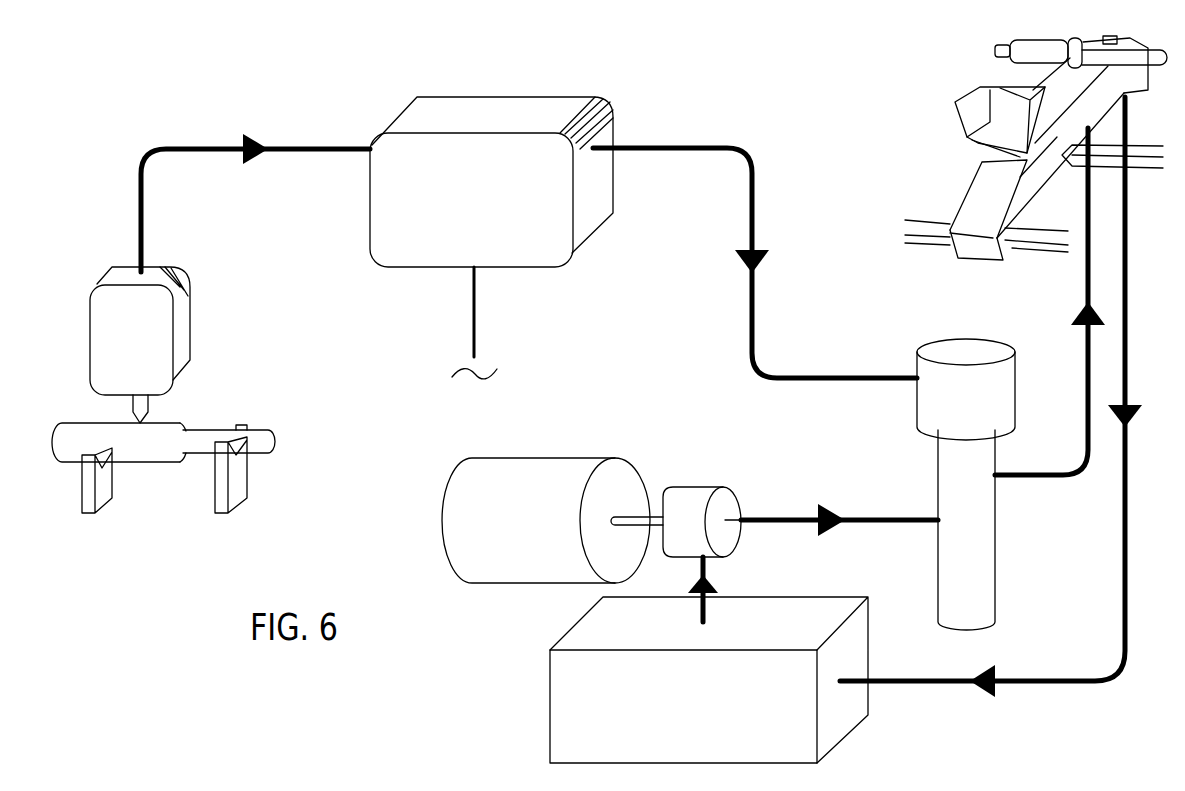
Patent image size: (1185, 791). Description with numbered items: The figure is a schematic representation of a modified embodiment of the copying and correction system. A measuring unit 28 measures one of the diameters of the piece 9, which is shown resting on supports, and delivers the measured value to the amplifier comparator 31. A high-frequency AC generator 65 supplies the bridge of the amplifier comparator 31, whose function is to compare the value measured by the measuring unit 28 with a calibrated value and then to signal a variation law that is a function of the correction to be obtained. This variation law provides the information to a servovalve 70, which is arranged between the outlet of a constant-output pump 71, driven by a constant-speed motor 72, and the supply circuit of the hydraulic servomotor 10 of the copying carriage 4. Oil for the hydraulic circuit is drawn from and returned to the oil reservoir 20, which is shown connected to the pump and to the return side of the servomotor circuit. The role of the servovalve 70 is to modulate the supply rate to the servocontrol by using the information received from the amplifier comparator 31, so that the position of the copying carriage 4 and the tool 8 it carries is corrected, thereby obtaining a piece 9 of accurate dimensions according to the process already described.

The copying carriage 4 is at (1060, 113).
The tool 8 is at (961, 117).
The piece 9 is at (148, 448).
The hydraulic servomotor 10 is at (1112, 107).
The oil reservoir 20 is at (562, 675).
The measuring unit 28 is at (163, 351).
The amplifier comparator 31 is at (383, 186).
The high-frequency AC generator 65 is at (474, 336).
The servovalve 70 is at (932, 398).
The constant-output pump 71 is at (697, 492).
The constant-speed motor 72 is at (533, 478).